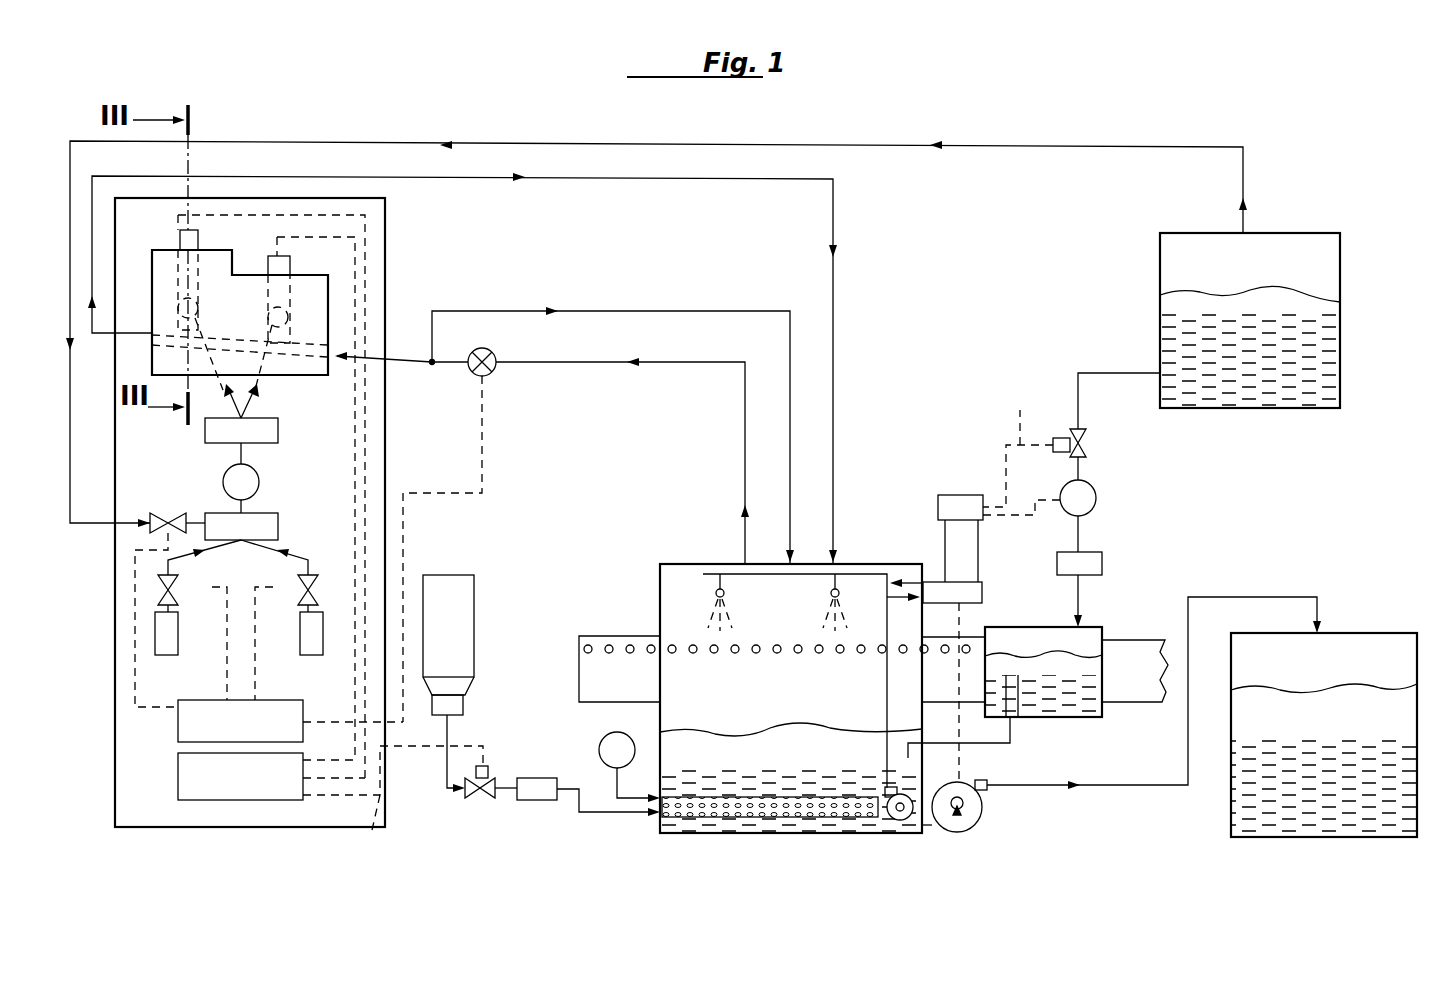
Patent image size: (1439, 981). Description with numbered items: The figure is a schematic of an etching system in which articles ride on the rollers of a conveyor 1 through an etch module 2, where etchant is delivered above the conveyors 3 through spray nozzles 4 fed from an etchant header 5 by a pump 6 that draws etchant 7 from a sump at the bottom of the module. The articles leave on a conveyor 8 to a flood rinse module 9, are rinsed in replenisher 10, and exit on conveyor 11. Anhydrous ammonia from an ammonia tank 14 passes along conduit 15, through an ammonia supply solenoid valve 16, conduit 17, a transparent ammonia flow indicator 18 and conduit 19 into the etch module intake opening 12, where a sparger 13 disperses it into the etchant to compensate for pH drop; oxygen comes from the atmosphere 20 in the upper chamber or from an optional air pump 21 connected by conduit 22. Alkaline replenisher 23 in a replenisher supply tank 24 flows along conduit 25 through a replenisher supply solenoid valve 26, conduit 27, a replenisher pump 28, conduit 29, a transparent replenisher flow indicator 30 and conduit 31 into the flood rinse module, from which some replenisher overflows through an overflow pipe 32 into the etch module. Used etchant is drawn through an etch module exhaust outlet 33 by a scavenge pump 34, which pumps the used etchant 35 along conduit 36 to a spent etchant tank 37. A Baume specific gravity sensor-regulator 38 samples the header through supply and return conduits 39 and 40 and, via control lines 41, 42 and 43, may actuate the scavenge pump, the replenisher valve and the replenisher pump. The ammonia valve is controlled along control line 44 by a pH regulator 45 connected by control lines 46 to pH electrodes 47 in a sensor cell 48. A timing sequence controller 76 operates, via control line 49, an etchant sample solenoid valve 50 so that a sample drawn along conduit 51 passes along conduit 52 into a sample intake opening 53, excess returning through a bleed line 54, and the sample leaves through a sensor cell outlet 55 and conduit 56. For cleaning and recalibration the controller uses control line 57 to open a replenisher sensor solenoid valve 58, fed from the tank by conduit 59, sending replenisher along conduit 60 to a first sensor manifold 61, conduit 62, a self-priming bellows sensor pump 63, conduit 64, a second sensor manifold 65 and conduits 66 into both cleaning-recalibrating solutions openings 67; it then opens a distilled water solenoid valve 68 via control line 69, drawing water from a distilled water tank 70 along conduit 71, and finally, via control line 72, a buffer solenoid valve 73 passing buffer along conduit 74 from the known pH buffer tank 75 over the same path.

The conveyor 1 is at (608, 636).
The etch module 2 is at (692, 563).
The conveyors 3 is at (713, 654).
The spray nozzles 4 is at (831, 592).
The etchant header 5 is at (860, 577).
The pump 6 is at (897, 820).
The etchant 7 is at (774, 770).
The conveyor 8 is at (968, 630).
The flood rinse module 9 is at (1037, 627).
The replenisher 10 is at (1085, 672).
The conveyor 11 is at (1138, 638).
The etch module intake opening 12 is at (657, 818).
The sparger 13 is at (806, 817).
The ammonia tank 14 is at (462, 612).
The conduit 15 is at (452, 740).
The ammonia supply solenoid valve 16 is at (470, 800).
The conduit 17 is at (504, 788).
The ammonia flow indicator 18 is at (537, 800).
The conduit 19 is at (592, 813).
The atmosphere 20 is at (792, 628).
The air pump 21 is at (608, 737).
The conduit 22 is at (616, 790).
The alkaline replenisher 23 is at (1235, 310).
The replenisher supply tank 24 is at (1160, 260).
The conduit 25 is at (1120, 373).
The replenisher supply solenoid valve 26 is at (1086, 437).
The conduit 27 is at (1082, 470).
The replenisher pump 28 is at (1096, 500).
The conduit 29 is at (1082, 537).
The replenisher flow indicator 30 is at (1102, 562).
The conduit 31 is at (1082, 598).
The overflow pipe 32 is at (1022, 693).
The etch module exhaust outlet 33 is at (932, 827).
The scavenge pump 34 is at (980, 812).
The used etchant 35 is at (1318, 738).
The conduit 36 is at (1142, 788).
The spent etchant tank 37 is at (1352, 633).
The Baume specific gravity sensor-regulator 38 is at (945, 495).
The supply conduit 39 is at (903, 618).
The return conduit 40 is at (908, 580).
The control line 41 is at (960, 750).
The control line 42 is at (1018, 442).
The control line 43 is at (1012, 517).
The control line 44 is at (370, 840).
The pH regulator 45 is at (252, 793).
The control lines 46 is at (362, 420).
The pH electrodes 47 is at (268, 256).
The sensor cell 48 is at (152, 265).
The control line 49 is at (407, 552).
The etchant sample solenoid valve 50 is at (496, 374).
The conduit 51 is at (647, 366).
The conduit 52 is at (408, 364).
The sample intake opening 53 is at (332, 352).
The bleed line 54 is at (636, 311).
The sensor cell outlet 55 is at (152, 332).
The conduit 56 is at (611, 180).
The control line 57 is at (133, 668).
The replenisher sensor solenoid valve 58 is at (170, 512).
The conduit 59 is at (72, 462).
The conduit 60 is at (197, 522).
The first sensor manifold 61 is at (282, 528).
The conduit 62 is at (246, 510).
The sensor pump 63 is at (252, 478).
The conduit 64 is at (240, 452).
The second sensor manifold 65 is at (205, 435).
The conduits 66 is at (262, 388).
The cleaning-recalibrating solutions openings 67 is at (268, 310).
The distilled water solenoid valve 68 is at (155, 590).
The control line 69 is at (227, 643).
The distilled water tank 70 is at (178, 640).
The conduit 71 is at (204, 556).
The control line 72 is at (252, 665).
The buffer solenoid valve 73 is at (317, 584).
The conduit 74 is at (268, 556).
The calibration liquid supply tank 75 is at (323, 650).
The timing sequence controller 76 is at (252, 736).